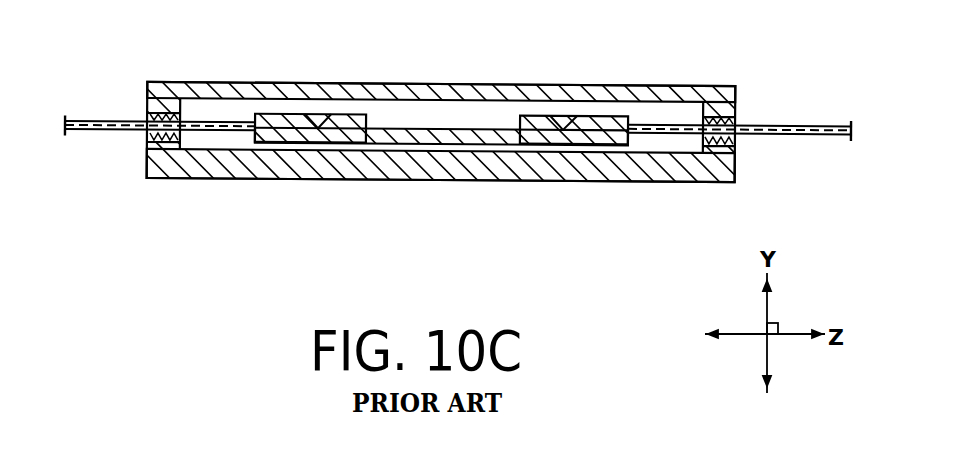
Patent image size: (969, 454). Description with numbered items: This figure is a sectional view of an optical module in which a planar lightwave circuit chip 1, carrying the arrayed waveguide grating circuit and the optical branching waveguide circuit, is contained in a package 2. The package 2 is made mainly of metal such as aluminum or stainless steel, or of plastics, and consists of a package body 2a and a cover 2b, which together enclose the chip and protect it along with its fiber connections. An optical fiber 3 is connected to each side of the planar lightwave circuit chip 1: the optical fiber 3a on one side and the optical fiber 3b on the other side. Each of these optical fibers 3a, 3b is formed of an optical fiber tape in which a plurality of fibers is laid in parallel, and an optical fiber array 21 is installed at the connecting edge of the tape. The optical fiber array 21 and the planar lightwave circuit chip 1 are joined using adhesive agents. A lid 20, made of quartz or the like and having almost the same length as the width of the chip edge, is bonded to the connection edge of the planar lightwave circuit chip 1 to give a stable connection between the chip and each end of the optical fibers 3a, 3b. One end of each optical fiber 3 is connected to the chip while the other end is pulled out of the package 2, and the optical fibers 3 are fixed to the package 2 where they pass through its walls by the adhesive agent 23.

The planar lightwave circuit chip 1 is at (440, 129).
The package 2 is at (450, 134).
The package body 2a is at (707, 181).
The cover 2b is at (712, 92).
The optical fiber 3 is at (458, 76).
The optical fiber 3a is at (107, 121).
The optical fiber 3b is at (785, 127).
The lid 20 is at (350, 115).
The optical fiber array 21 is at (283, 114).
The adhesive agent 23 is at (148, 138).